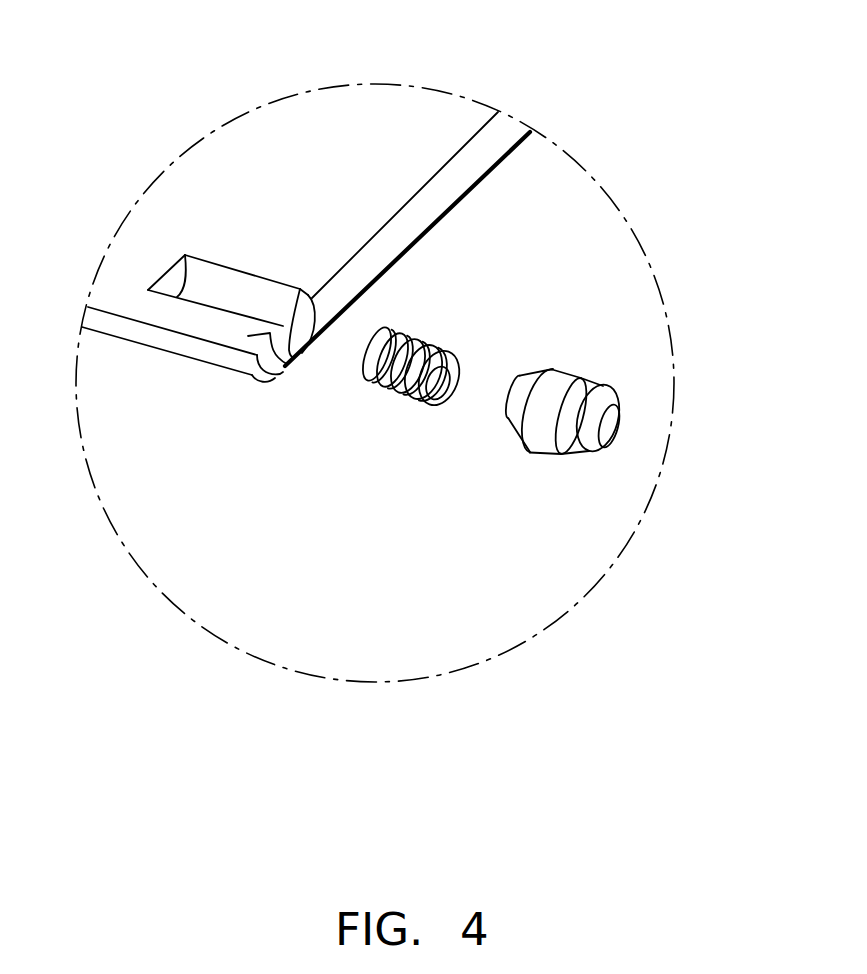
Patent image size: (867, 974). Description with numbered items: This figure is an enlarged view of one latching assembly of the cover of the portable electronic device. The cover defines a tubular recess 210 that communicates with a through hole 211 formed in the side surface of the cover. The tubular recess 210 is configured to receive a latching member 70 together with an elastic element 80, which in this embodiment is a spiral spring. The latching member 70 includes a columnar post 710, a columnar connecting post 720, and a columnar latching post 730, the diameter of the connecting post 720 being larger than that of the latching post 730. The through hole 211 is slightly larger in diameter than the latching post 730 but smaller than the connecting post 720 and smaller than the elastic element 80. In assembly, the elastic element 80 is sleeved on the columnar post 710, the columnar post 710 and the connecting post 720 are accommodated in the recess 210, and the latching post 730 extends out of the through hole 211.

The latching member 70 is at (433, 501).
The elastic element 80 is at (428, 332).
The tubular recess 210 is at (217, 287).
The through hole 211 is at (285, 322).
The columnar post 710 is at (517, 407).
The columnar connecting post 720 is at (537, 427).
The columnar latching post 730 is at (590, 435).